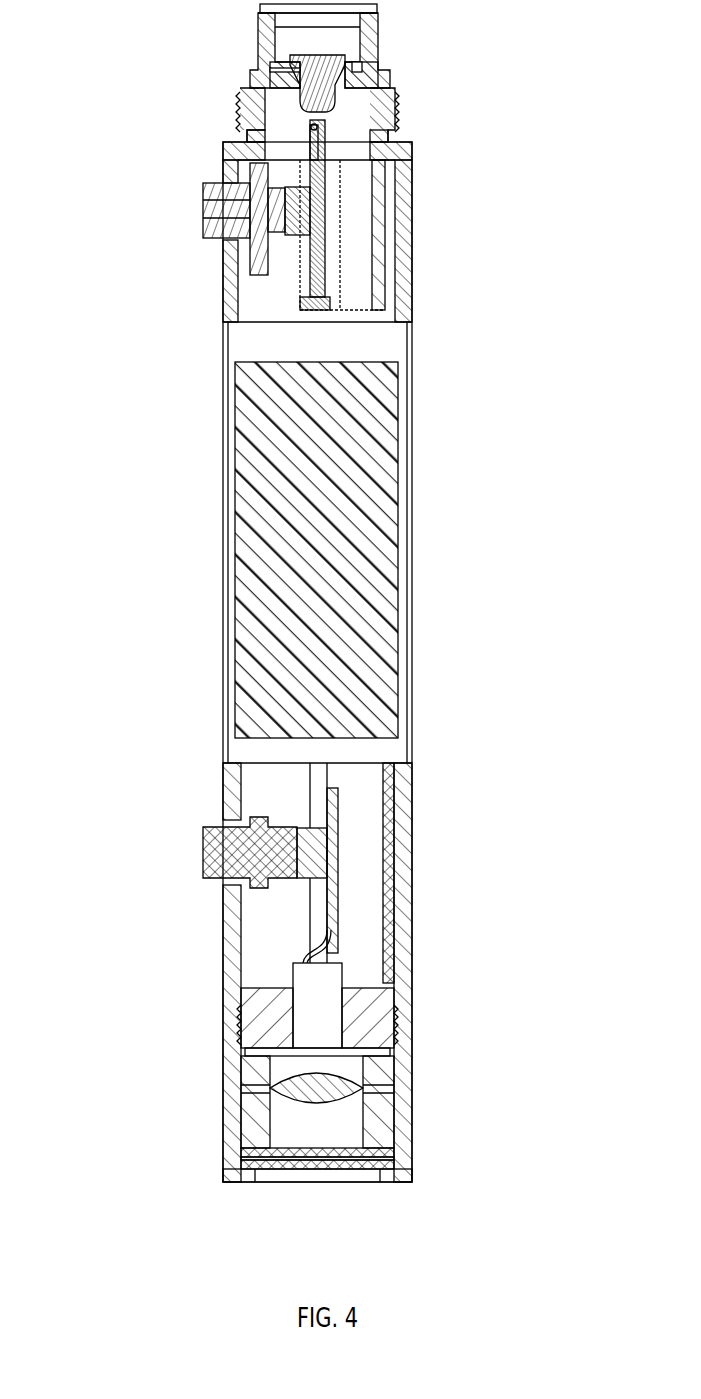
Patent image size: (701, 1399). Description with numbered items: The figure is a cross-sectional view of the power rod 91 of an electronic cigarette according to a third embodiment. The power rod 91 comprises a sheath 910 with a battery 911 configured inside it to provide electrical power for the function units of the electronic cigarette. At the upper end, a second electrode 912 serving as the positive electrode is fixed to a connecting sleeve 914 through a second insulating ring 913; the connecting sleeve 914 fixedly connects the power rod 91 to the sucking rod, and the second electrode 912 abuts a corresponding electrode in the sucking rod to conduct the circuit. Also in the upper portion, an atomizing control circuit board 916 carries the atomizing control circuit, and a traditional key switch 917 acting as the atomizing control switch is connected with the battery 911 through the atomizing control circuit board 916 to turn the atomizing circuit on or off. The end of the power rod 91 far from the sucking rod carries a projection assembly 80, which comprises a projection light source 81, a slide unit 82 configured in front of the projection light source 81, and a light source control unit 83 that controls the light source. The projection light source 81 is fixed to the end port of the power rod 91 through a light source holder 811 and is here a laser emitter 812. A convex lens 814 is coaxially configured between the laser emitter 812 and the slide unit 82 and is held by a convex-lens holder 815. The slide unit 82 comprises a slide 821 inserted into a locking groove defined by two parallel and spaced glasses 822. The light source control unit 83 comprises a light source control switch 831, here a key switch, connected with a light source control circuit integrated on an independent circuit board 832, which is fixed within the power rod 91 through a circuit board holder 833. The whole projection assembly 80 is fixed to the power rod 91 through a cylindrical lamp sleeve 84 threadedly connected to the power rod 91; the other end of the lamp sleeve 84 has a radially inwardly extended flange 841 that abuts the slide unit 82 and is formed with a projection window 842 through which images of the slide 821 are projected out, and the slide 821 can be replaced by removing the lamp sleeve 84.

The projection assembly 80 is at (85, 1235).
The projection light source 81 is at (140, 1087).
The light source holder 811 is at (265, 1022).
The laser emitter 812 is at (315, 990).
The convex lens 814 is at (315, 1090).
The convex-lens holder 815 is at (250, 1065).
The slide unit 82 is at (140, 1173).
The slide 821 is at (250, 1158).
The glasses 822 is at (245, 1150).
The light source control unit 83 is at (140, 932).
The light source control switch 831 is at (225, 862).
The circuit board 832 is at (325, 905).
The circuit board holder 833 is at (385, 938).
The lamp sleeve 84 is at (140, 1235).
The flange 841 is at (255, 1172).
The projection window 842 is at (285, 1175).
The power rod 91 is at (125, 548).
The sheath 910 is at (225, 540).
The battery 911 is at (250, 461).
The second electrode 912 is at (300, 105).
The second insulating ring 913 is at (290, 72).
The connecting sleeve 914 is at (258, 33).
The atomizing control circuit board 916 is at (315, 290).
The key switch 917 is at (240, 212).